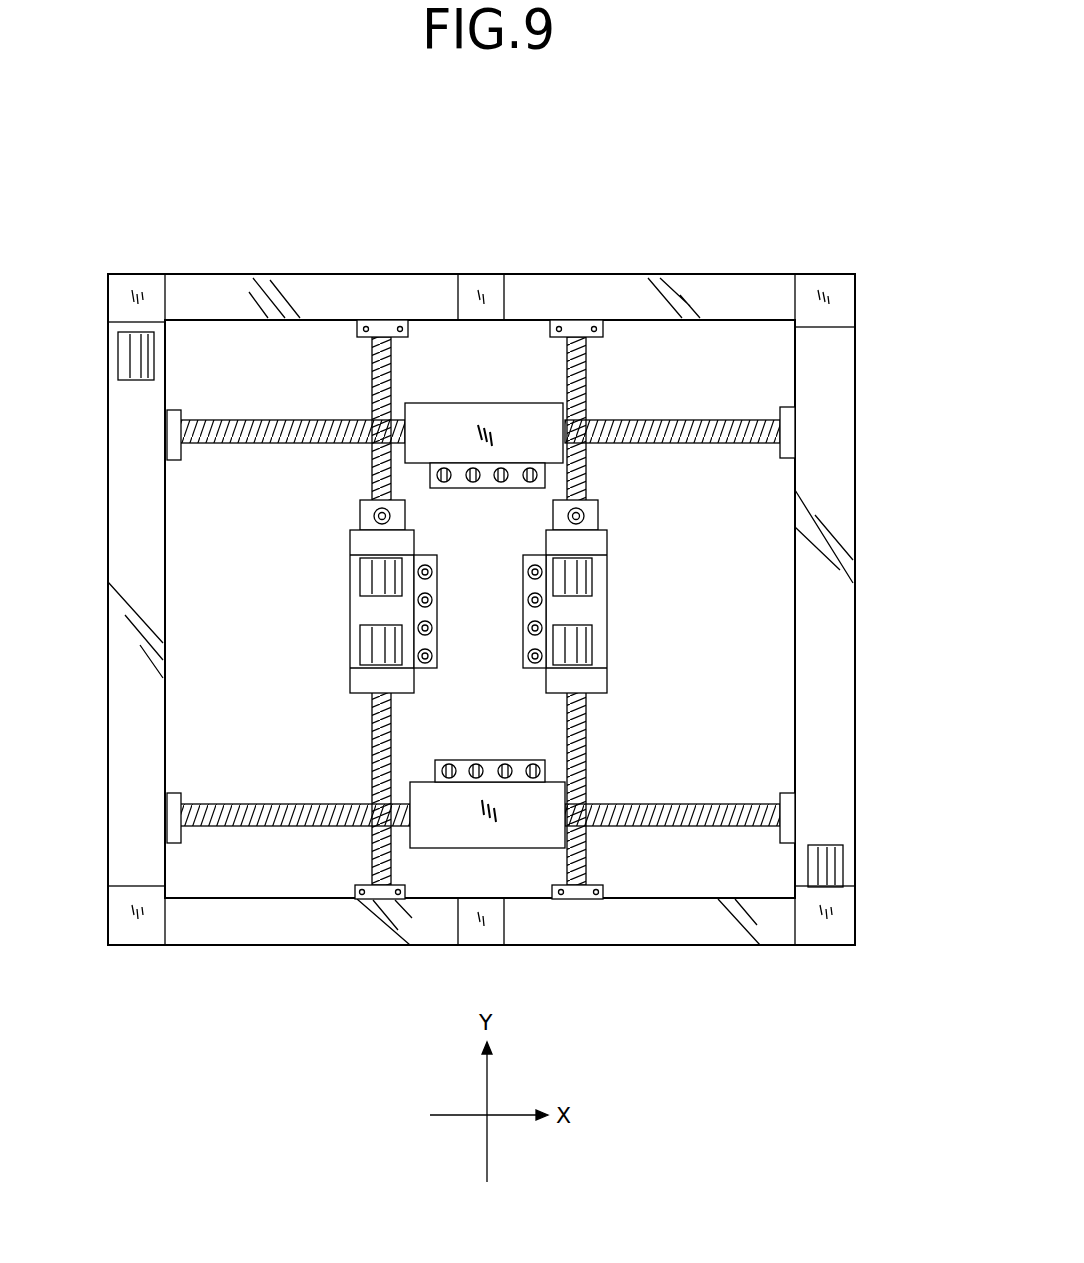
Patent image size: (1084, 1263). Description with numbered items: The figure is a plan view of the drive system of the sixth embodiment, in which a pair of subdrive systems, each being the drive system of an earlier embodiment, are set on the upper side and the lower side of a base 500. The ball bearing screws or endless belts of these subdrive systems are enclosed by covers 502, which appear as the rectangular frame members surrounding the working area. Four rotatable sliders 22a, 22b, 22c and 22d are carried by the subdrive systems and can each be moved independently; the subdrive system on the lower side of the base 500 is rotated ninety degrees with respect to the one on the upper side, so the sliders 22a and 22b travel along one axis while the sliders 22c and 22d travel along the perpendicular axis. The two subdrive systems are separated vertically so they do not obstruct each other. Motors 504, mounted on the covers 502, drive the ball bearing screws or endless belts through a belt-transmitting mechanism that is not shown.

The base 500 is at (757, 273).
The cover 502 is at (327, 292).
The motor 504 is at (157, 355).
The rotatable slider 22a is at (349, 619).
The rotatable slider 22b is at (607, 610).
The rotatable slider 22c is at (507, 401).
The rotatable slider 22d is at (450, 849).